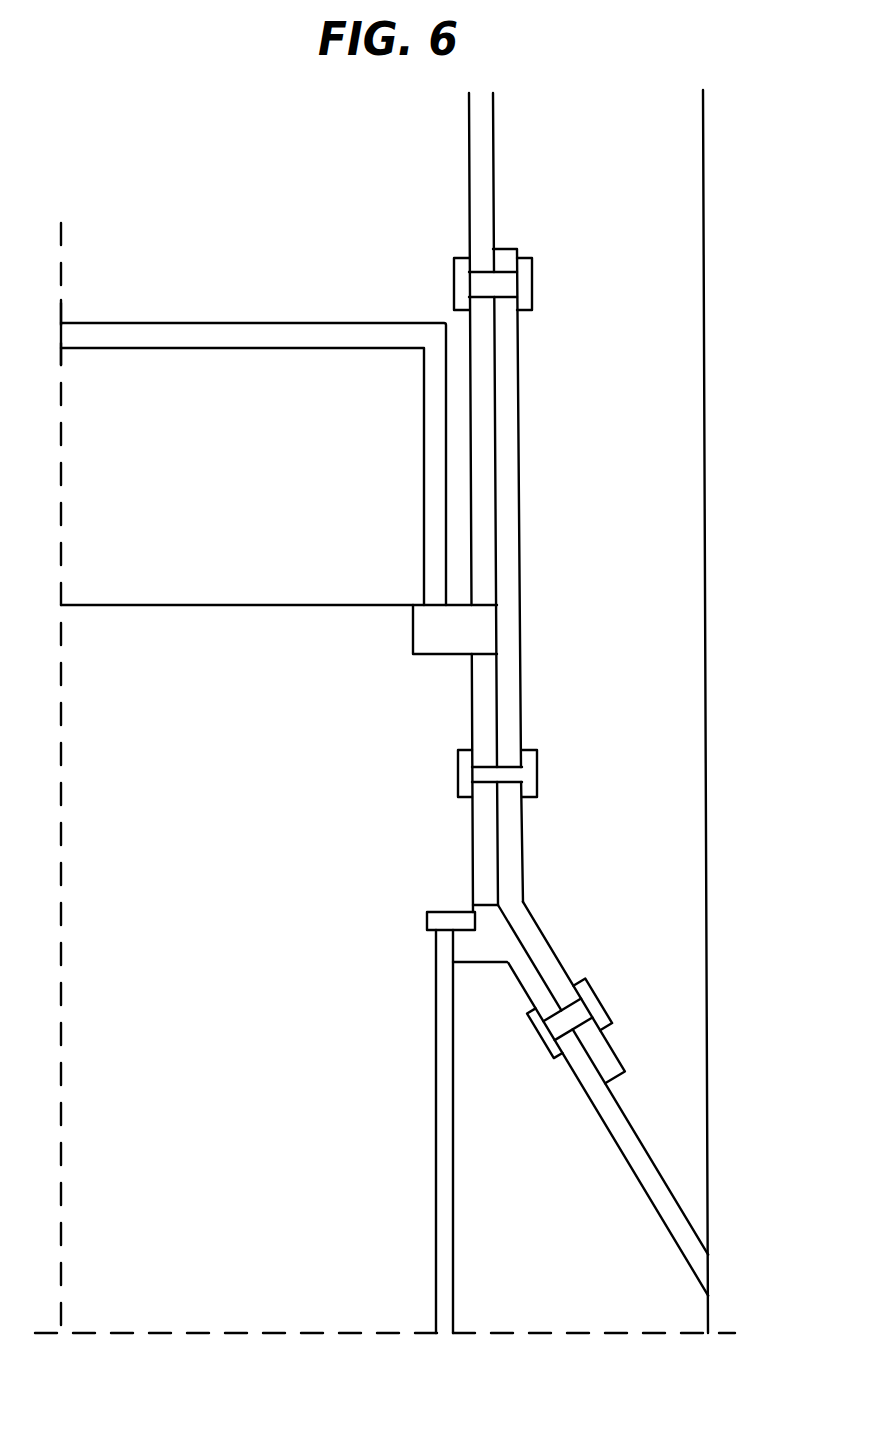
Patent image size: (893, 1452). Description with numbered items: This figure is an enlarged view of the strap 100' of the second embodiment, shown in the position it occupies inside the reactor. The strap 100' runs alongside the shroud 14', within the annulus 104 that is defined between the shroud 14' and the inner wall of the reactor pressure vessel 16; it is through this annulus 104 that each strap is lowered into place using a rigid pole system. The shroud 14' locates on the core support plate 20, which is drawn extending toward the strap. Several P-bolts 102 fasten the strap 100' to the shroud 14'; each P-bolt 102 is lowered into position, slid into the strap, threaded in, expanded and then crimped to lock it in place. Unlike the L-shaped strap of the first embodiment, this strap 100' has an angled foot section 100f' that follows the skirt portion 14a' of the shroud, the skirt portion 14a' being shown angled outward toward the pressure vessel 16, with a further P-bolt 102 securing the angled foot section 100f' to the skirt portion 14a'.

The shroud 14' is at (464, 502).
The strap 100' is at (529, 575).
The P-bolt 102 is at (462, 284).
The annulus 104 is at (618, 278).
The reactor pressure vessel 16 is at (703, 541).
The core support plate 20 is at (133, 350).
The angled foot section 100f' is at (585, 993).
The skirt portion 14a' is at (603, 1100).